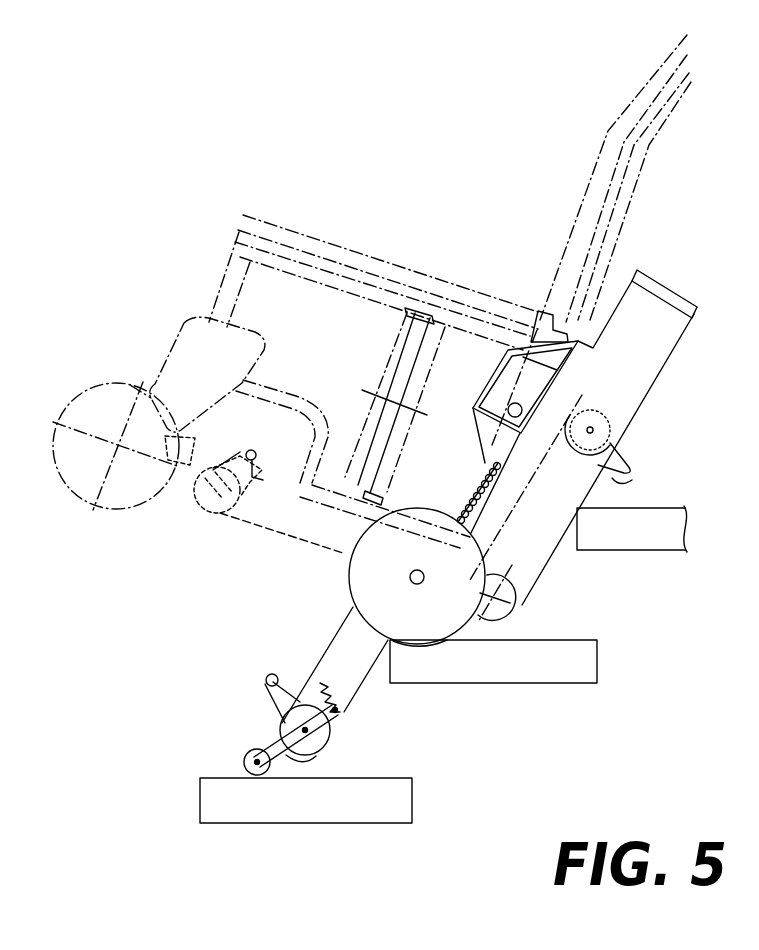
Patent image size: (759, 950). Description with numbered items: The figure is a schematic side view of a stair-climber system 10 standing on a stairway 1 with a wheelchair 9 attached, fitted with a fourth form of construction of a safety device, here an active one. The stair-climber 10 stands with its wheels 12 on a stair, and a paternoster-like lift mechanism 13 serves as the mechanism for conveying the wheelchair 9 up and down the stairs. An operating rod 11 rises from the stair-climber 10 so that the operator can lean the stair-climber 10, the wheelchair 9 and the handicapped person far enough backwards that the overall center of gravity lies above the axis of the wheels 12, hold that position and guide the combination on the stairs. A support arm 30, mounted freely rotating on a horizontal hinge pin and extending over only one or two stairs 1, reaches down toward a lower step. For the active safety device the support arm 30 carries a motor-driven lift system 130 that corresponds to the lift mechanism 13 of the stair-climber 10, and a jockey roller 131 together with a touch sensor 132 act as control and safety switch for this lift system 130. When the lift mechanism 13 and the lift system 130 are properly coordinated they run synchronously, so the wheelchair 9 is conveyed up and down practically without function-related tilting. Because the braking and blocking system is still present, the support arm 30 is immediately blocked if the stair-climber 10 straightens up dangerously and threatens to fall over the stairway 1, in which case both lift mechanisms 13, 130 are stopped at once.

The stairway 1 is at (643, 530).
The wheelchair 9 is at (357, 254).
The stair-climber system 10 is at (620, 368).
The operating rod 11 is at (587, 208).
The wheels 12 is at (368, 587).
The lift mechanism 13 is at (632, 472).
The support arm 30 is at (347, 660).
The motor-driven lift system 130 is at (273, 707).
The jockey roller 131 is at (243, 767).
The touch sensor 132 is at (317, 767).